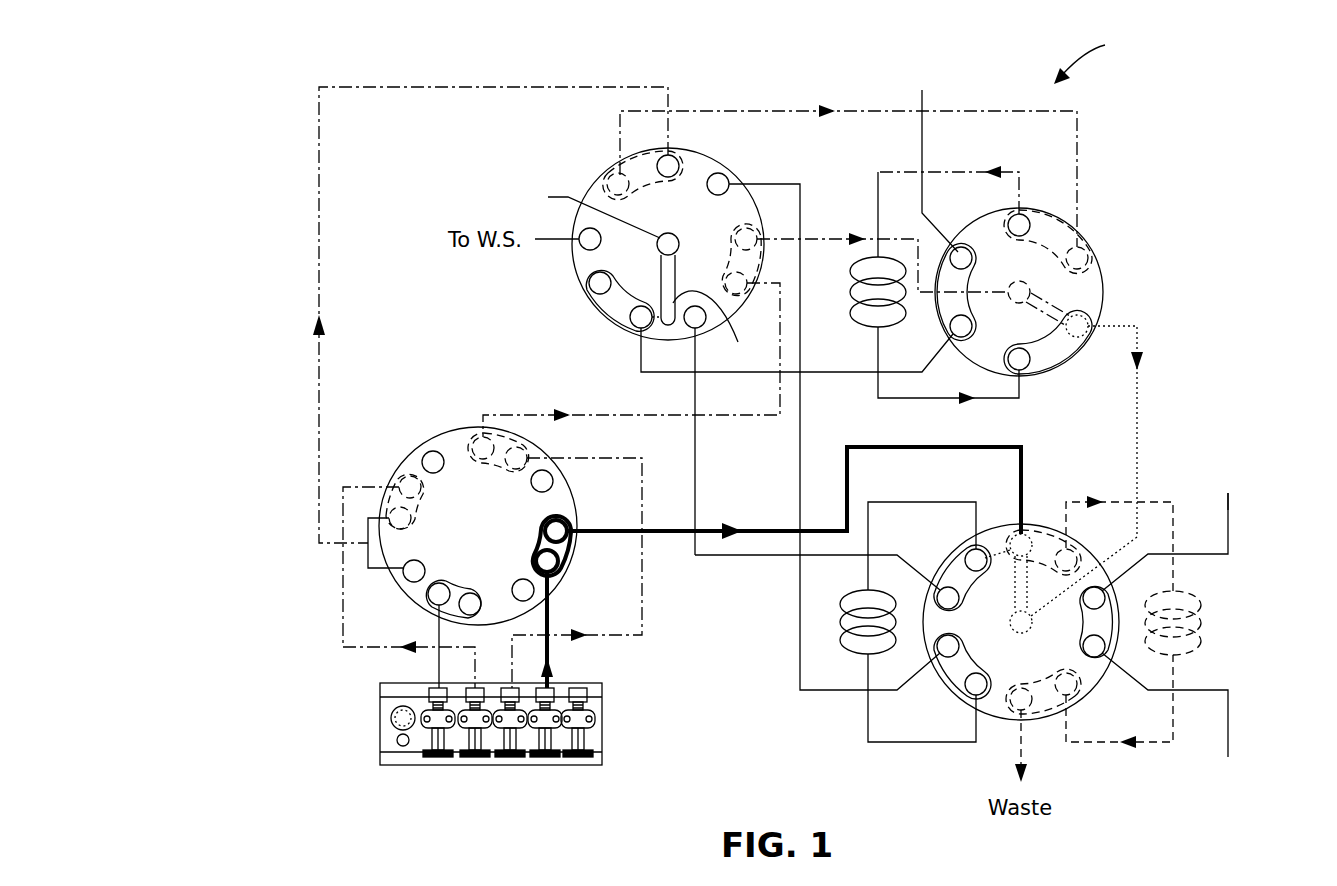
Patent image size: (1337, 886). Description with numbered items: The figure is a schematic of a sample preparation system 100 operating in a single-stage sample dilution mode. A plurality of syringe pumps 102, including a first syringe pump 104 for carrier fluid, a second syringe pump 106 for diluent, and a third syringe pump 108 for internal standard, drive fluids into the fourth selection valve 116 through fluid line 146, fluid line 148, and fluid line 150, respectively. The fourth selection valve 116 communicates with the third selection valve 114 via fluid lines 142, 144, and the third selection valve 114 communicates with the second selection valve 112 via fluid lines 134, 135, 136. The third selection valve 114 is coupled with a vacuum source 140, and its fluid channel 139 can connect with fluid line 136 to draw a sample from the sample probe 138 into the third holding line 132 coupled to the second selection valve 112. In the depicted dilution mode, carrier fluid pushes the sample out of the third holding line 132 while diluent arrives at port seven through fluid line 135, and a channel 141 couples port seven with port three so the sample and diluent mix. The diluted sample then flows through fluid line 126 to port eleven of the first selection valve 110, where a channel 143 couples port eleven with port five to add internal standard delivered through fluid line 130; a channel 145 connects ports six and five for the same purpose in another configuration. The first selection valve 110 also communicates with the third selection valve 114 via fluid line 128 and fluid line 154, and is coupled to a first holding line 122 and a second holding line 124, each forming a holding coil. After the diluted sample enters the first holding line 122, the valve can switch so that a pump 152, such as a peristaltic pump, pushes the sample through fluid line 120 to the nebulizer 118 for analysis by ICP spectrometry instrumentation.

The system 100 is at (1102, 58).
The plurality of syringe pumps 102 is at (335, 708).
The first syringe pump 104 is at (475, 757).
The second syringe pump 106 is at (510, 757).
The third syringe pump 108 is at (718, 736).
The first selection valve 110 is at (950, 550).
The second selection valve 112 is at (1105, 284).
The third selection valve 114 is at (592, 182).
The fourth selection valve 116 is at (452, 428).
The nebulizer 118 is at (1211, 458).
The fluid line 120 is at (1228, 557).
The first holding line 122 is at (1200, 622).
The second holding line 124 is at (842, 622).
The fluid line 126 is at (1143, 396).
The fluid line 128 is at (753, 558).
The fluid line 130 is at (680, 548).
The third holding line 132 is at (855, 298).
The fluid line 134 is at (760, 111).
The fluid line 135 is at (842, 236).
The fluid line 136 is at (826, 378).
The sample probe 138 is at (940, 56).
The fluid channel 139 is at (738, 342).
The vacuum source 140 is at (487, 174).
The channel 141 is at (1062, 302).
The fluid line 142 is at (535, 87).
The channel 143 is at (1013, 590).
The fluid line 144 is at (768, 420).
The channel 145 is at (1003, 543).
The fluid line 146 is at (343, 588).
The fluid line 148 is at (640, 470).
The fluid line 150 is at (555, 617).
The pump 152 is at (1211, 789).
The fluid line 154 is at (800, 645).